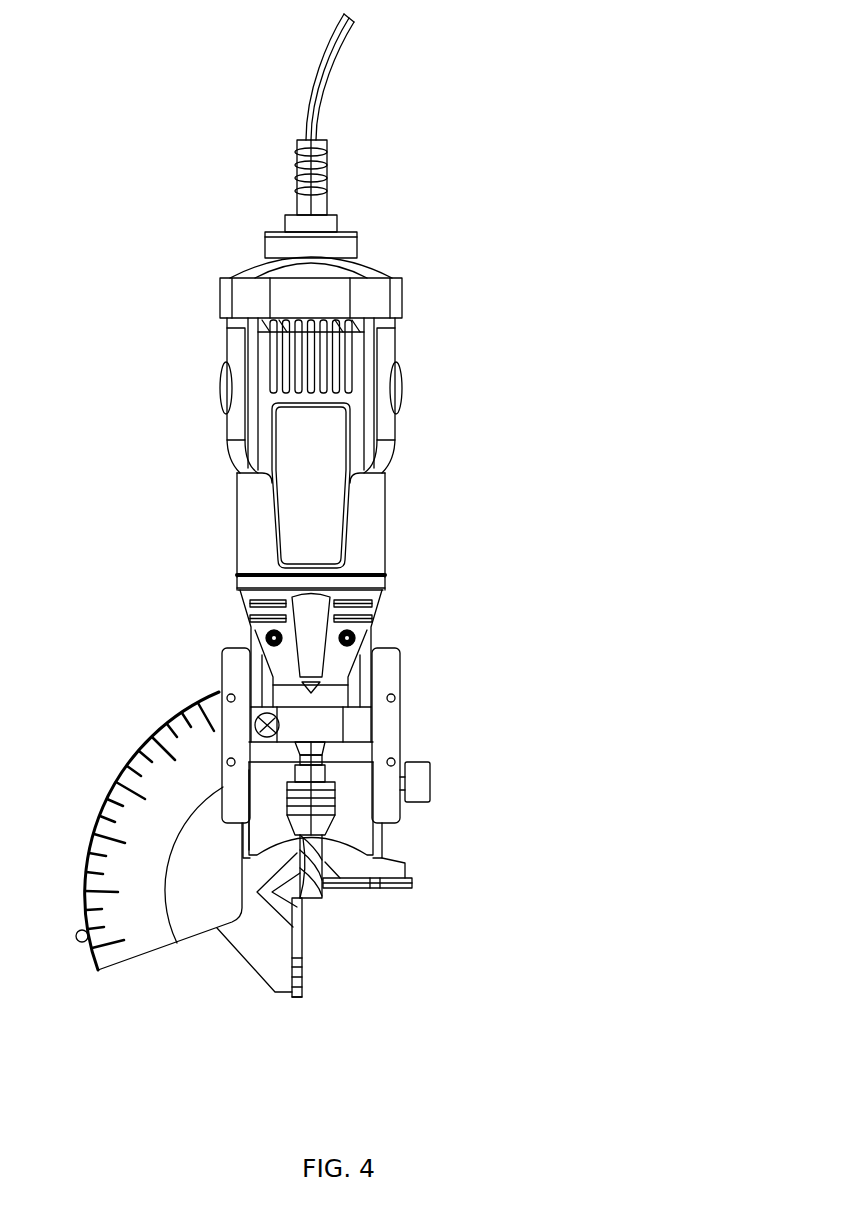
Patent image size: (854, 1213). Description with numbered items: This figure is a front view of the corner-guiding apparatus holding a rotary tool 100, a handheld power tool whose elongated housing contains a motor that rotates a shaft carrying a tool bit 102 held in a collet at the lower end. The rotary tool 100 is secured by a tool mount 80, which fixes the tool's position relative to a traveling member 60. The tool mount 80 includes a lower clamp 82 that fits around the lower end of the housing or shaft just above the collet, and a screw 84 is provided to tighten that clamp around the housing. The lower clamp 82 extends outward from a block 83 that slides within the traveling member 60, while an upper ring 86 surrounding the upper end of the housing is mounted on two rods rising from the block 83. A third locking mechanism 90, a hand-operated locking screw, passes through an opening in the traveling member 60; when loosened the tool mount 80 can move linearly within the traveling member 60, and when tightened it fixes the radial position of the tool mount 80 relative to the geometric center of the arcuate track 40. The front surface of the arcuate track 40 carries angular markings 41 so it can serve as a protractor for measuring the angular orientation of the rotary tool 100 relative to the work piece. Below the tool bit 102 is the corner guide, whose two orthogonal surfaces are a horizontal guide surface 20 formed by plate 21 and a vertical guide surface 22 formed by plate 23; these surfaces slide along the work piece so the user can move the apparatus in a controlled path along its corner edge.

The rotary tool 100 is at (387, 540).
The upper ring 86 is at (403, 303).
The tool mount 80 is at (387, 832).
The traveling member 60 is at (401, 723).
The lower clamp 82 is at (357, 733).
The screw 84 is at (280, 727).
The block 83 is at (280, 832).
The third locking mechanism 90 is at (430, 781).
The tool bit 102 is at (317, 898).
The plate 21 is at (413, 882).
The horizontal guide surface 20 is at (395, 890).
The vertical guide surface 22 is at (302, 957).
The plate 23 is at (297, 998).
The arcuate track 40 is at (92, 827).
The angular markings 41 is at (147, 777).